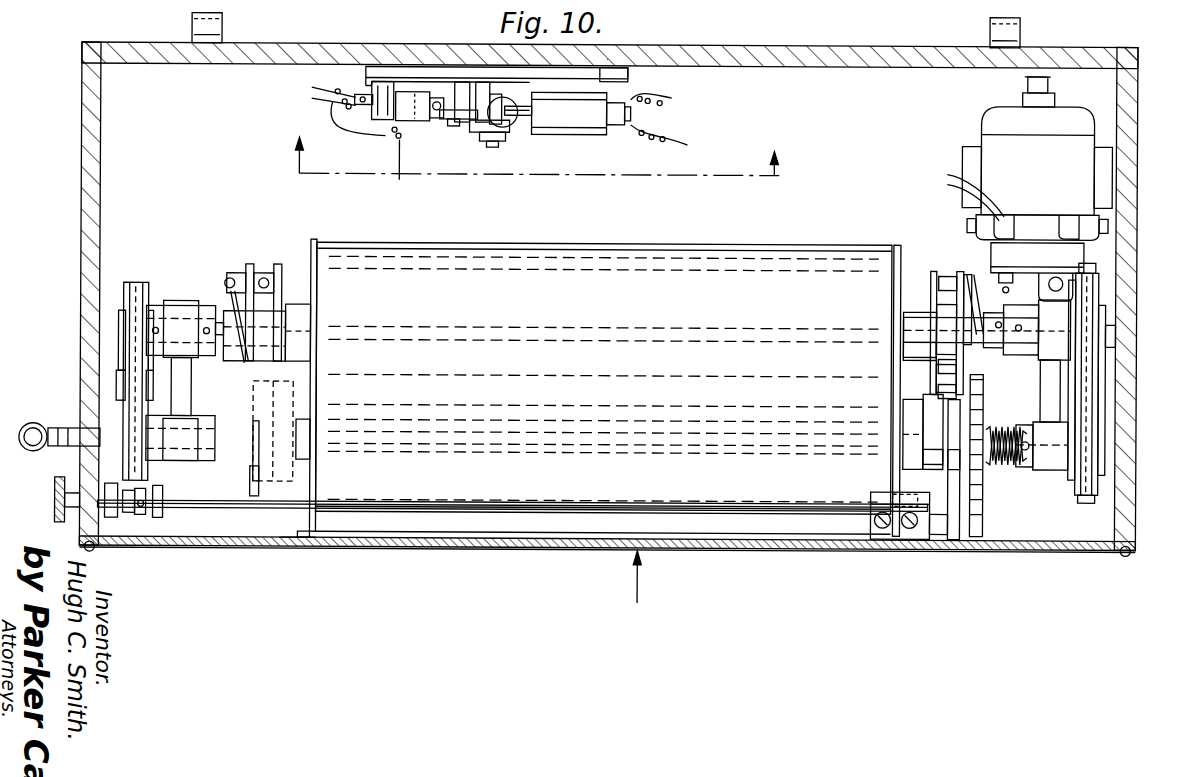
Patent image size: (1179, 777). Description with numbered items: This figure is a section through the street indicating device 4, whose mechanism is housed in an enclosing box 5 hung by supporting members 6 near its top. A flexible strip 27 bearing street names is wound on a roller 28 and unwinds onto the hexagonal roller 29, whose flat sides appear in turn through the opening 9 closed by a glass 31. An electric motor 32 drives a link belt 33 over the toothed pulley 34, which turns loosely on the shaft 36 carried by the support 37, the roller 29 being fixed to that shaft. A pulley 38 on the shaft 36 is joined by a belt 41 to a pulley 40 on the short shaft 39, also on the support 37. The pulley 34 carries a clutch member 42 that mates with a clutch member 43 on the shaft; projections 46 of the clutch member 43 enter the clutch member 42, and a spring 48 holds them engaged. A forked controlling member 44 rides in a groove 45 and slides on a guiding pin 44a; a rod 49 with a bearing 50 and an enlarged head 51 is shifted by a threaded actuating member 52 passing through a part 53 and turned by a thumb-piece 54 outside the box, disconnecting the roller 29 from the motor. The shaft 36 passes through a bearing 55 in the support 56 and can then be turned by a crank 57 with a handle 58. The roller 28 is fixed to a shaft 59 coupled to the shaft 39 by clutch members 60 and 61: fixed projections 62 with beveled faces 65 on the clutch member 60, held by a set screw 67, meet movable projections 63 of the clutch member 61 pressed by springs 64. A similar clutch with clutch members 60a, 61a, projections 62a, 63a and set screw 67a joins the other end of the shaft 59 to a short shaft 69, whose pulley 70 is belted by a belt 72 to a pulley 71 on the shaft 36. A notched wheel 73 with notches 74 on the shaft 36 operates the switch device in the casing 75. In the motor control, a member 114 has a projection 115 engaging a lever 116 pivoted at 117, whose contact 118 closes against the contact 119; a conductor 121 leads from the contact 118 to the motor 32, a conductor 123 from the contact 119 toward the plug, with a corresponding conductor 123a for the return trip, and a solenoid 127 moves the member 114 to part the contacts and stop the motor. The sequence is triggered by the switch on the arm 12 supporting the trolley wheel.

The street indicating device 4 is at (629, 586).
The enclosing box 5 is at (712, 46).
The supporting members 6 is at (223, 24).
The opening 9 is at (352, 547).
The arm supporting the trolley wheel 12 is at (537, 147).
The flexible strip 27 is at (670, 250).
The roller 28 is at (610, 256).
The roller 29 is at (518, 376).
The glass 31 is at (572, 547).
The electric motor 32 is at (983, 138).
The belt 33 is at (987, 532).
The pulley 34 is at (956, 536).
The shaft 36 is at (284, 455).
The support 37 is at (1048, 378).
The pulley 38 is at (1104, 425).
The shaft 39 is at (1110, 330).
The pulley 40 is at (1101, 300).
The belt 41 is at (1100, 270).
The clutch member 42 is at (920, 476).
The clutch member 43 is at (918, 462).
The forked controlling member 44 is at (960, 470).
The guiding pin 44a is at (940, 535).
The groove 45 is at (950, 428).
The projections 46 is at (925, 448).
The spring 48 is at (1005, 452).
The rod 49 is at (600, 500).
The bearing 50 is at (166, 507).
The enlarged head 51 is at (146, 510).
The threaded actuating member 52 is at (131, 513).
The part 53 is at (114, 518).
The thumb-piece 54 is at (56, 500).
The bearing 55 is at (185, 460).
The support 56 is at (184, 404).
The crank 57 is at (62, 428).
The handle 58 is at (26, 426).
The shaft 59 is at (436, 326).
The clutch member 60 is at (934, 268).
The clutch member 60a is at (282, 264).
The clutch member 61 is at (960, 268).
The clutch member 61a is at (254, 264).
The projections 62 is at (940, 322).
The projections 62a is at (268, 273).
The movable projections 63 is at (957, 272).
The movable projections 63a is at (240, 272).
The springs 64 is at (980, 272).
The beveled faces 65 is at (915, 330).
The set screw 67 is at (912, 360).
The set screw 67a is at (290, 356).
The shaft 69 is at (226, 318).
The pulley 70 is at (150, 290).
The pulley 71 is at (122, 398).
The belt 72 is at (125, 366).
The notched wheel 73 is at (256, 496).
The notches 74 is at (256, 474).
The casing 75 is at (296, 386).
The member 114 is at (500, 114).
The projection 115 is at (482, 98).
The lever 116 is at (470, 122).
The pivot 117 is at (455, 118).
The contact 118 is at (426, 92).
The contact 119 is at (398, 90).
The conductor 121 is at (496, 131).
The conductor 123 is at (322, 94).
The conductor 123a is at (366, 122).
The solenoid 127 is at (570, 133).